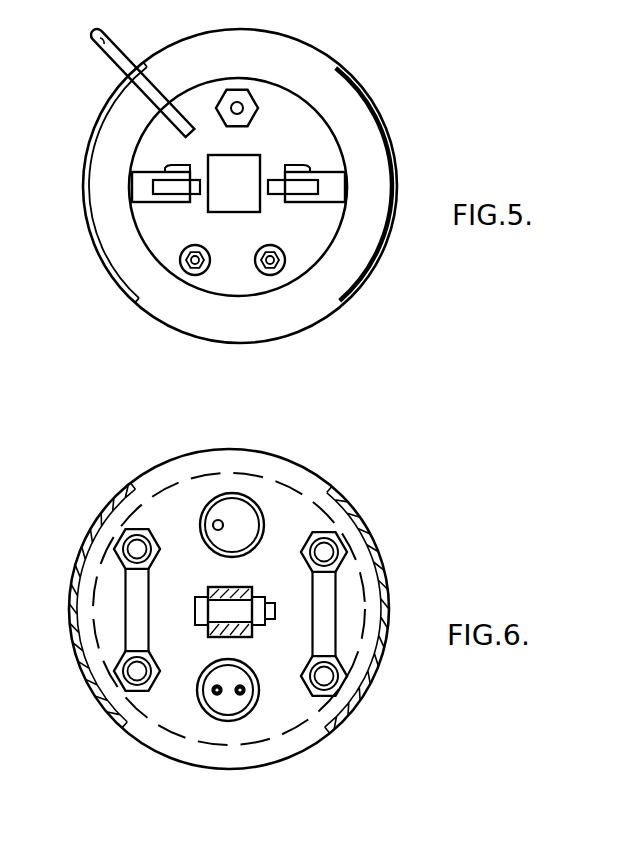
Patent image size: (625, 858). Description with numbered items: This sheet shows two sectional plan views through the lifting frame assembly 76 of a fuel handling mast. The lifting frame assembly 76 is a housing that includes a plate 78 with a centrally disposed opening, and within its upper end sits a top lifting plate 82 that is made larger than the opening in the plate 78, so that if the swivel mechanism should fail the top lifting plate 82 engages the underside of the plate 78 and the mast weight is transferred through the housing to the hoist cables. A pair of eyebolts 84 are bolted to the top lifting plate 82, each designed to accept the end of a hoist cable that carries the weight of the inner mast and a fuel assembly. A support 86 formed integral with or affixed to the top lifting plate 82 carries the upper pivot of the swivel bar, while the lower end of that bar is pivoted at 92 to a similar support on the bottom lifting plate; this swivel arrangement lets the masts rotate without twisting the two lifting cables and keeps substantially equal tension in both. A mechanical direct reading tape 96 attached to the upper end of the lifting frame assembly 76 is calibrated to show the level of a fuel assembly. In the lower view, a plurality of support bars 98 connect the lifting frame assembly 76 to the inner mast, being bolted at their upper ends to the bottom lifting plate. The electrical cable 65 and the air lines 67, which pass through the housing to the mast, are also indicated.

In FIG. 5, the lifting frame assembly 76 is at (328, 60).
In FIG. 6, the lifting frame assembly 76 is at (286, 463).
In FIG. 5, the plate 78 is at (374, 150).
In FIG. 5, the top lifting plate 82 is at (300, 150).
In FIG. 5, the eyebolts 84 is at (152, 183).
In FIG. 5, the support 86 is at (245, 198).
In FIG. 5, the mechanical direct reading tape 96 is at (115, 58).
In FIG. 5, the air lines 67 is at (258, 266).
In FIG. 6, the electrical cable 65 is at (215, 522).
In FIG. 6, the support bars 98 is at (125, 663).
In FIG. 6, the pivot 92 is at (210, 612).